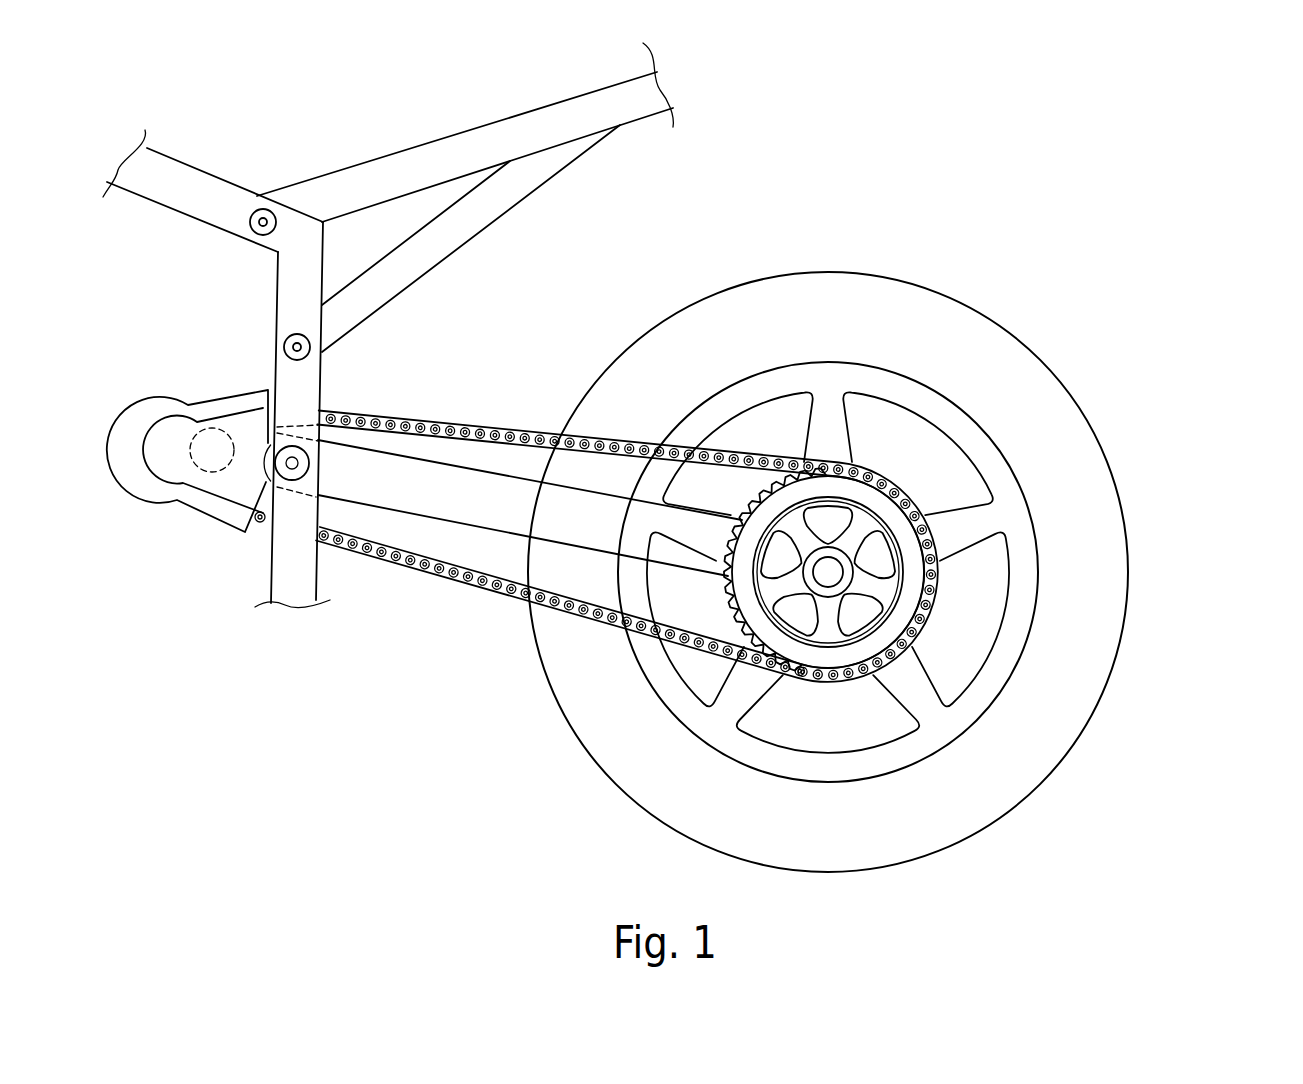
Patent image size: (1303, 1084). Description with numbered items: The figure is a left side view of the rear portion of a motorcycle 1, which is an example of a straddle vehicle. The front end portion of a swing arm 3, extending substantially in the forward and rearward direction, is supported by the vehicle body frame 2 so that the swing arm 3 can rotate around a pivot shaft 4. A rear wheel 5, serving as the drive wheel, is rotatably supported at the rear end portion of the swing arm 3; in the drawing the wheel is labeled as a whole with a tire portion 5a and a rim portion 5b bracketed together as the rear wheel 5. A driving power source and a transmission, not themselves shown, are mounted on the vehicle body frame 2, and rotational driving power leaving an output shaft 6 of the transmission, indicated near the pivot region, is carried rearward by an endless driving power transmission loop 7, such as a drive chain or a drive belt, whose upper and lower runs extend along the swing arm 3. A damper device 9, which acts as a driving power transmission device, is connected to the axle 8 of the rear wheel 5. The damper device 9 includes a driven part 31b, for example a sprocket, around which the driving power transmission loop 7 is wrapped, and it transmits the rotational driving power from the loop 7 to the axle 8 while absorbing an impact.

The motorcycle 1 is at (892, 182).
The vehicle body frame 2 is at (213, 174).
The swing arm 3 is at (480, 533).
The pivot shaft 4 is at (290, 462).
The rear wheel 5 is at (913, 572).
The tire 5a is at (1098, 558).
The wheel rim 5b is at (1023, 597).
The output shaft 6 is at (190, 442).
The driving power transmission loop 7 is at (483, 426).
The axle 8 is at (843, 578).
The damper device 9 is at (905, 548).
The driven part 31b is at (770, 453).